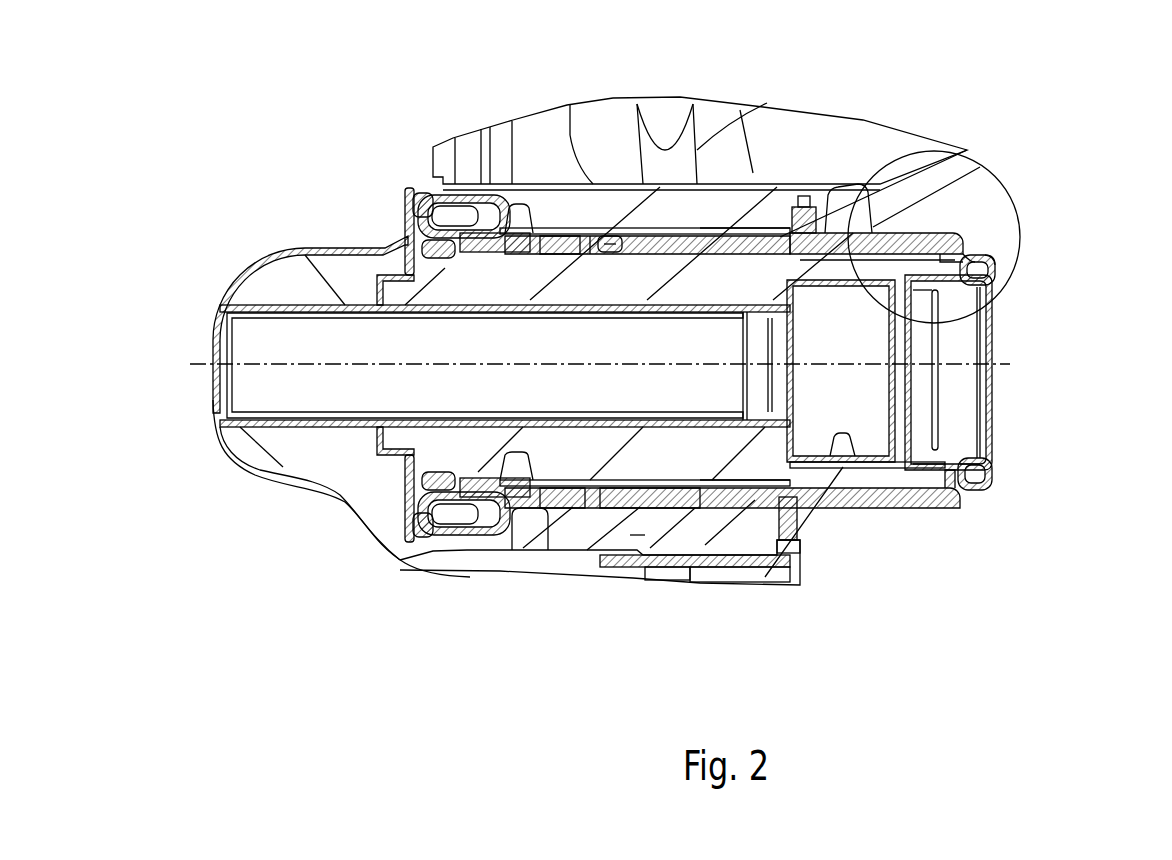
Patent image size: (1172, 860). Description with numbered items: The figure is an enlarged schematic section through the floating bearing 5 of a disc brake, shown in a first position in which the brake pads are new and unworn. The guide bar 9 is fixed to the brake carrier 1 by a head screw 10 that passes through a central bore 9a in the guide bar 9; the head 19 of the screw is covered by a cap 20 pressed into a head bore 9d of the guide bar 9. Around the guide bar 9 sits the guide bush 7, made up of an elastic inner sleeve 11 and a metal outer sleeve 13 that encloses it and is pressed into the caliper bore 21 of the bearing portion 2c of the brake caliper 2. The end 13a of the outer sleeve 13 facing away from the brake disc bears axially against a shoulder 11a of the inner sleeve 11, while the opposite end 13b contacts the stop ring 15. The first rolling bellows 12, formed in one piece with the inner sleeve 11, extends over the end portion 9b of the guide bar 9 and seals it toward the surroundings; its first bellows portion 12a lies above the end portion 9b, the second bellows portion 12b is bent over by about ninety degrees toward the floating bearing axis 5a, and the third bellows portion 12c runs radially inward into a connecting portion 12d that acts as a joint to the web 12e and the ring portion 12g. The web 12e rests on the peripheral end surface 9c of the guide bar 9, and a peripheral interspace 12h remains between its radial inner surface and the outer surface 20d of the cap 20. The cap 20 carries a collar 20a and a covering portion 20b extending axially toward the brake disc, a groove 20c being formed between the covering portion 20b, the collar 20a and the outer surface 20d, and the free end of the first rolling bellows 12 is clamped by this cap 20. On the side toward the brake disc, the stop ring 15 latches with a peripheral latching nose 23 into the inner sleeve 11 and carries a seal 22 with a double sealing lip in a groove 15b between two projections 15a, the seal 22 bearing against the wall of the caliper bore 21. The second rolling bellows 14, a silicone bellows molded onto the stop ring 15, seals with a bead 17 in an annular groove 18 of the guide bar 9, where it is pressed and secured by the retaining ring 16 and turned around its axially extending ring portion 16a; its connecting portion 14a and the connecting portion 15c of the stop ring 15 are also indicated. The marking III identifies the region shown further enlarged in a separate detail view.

The brake carrier 1 is at (248, 290).
The brake caliper 2 is at (737, 97).
The bearing portion 2c is at (740, 560).
The floating bearing 5 is at (1013, 510).
The floating bearing axis 5a is at (290, 365).
The guide bush 7 is at (637, 527).
The guide bar 9 is at (778, 583).
The central bore 9a is at (367, 400).
The end portion 9b is at (926, 253).
The peripheral end surface 9c is at (988, 448).
The head bore 9d is at (852, 462).
The head screw 10 is at (333, 387).
The inner sleeve 11 is at (695, 228).
The shoulder 11a is at (812, 230).
The first rolling bellows 12 is at (891, 233).
The first bellows portion 12a is at (941, 253).
The second bellows portion 12b is at (968, 253).
The third bellows portion 12c is at (988, 253).
The connecting portion 12d is at (980, 348).
The web 12e is at (942, 316).
The ring portion 12g is at (1020, 253).
The interspace 12h is at (993, 288).
The outer sleeve 13 is at (655, 520).
The end 13a is at (777, 236).
The end 13b is at (607, 236).
The second rolling bellows 14 is at (470, 226).
The connecting portion 14a is at (533, 233).
The stop ring 15 is at (558, 233).
The projection 15a is at (563, 502).
The groove 15b is at (572, 230).
The connecting portion 15c is at (494, 523).
The retaining ring 16 is at (411, 200).
The ring portion 16a is at (462, 200).
The bead 17 is at (412, 212).
The annular groove 18 is at (420, 535).
The head 19 is at (884, 480).
The cap 20 is at (993, 290).
The collar 20a is at (995, 473).
The covering portion 20b is at (1000, 248).
The groove 20c is at (968, 480).
The outer surface 20d is at (930, 478).
The caliper bore 21 is at (702, 525).
The seal 22 is at (570, 486).
The latching nose 23 is at (614, 236).
The marking III is at (1020, 266).